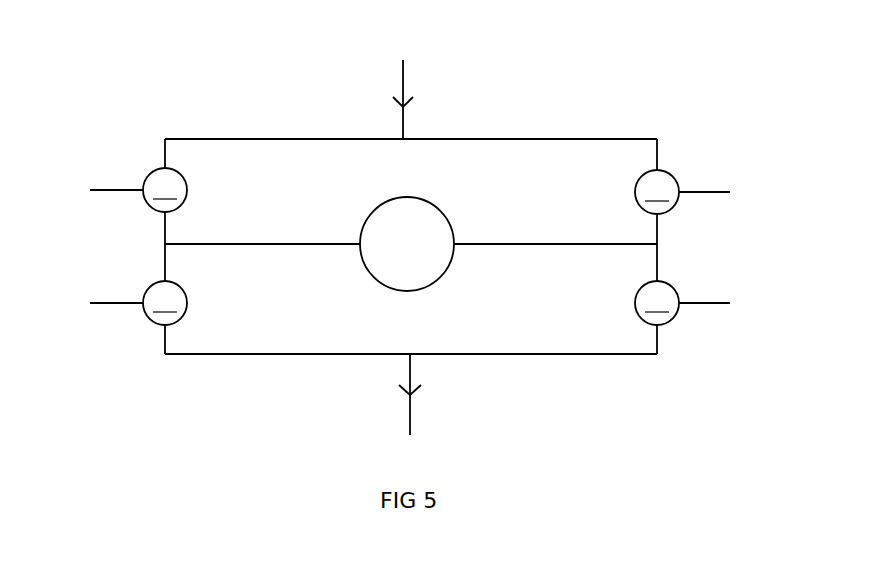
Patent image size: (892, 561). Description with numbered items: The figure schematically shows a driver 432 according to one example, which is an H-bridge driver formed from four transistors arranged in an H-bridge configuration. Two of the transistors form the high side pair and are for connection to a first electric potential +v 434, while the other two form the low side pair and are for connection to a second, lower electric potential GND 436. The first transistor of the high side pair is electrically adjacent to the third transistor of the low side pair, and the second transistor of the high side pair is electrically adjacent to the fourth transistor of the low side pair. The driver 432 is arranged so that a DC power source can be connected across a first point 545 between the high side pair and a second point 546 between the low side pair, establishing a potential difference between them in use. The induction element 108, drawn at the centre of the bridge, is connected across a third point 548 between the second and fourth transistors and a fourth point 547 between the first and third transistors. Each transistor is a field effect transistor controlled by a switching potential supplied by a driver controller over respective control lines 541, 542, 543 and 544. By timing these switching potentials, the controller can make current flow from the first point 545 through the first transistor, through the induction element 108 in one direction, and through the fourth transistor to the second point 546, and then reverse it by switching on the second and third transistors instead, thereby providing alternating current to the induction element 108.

The driver 432 is at (614, 94).
The induction element 108 is at (390, 254).
The first electric potential +v 434 is at (452, 99).
The second electric potential GND 436 is at (460, 394).
The control line 541 is at (120, 188).
The control line 542 is at (703, 195).
The control line 543 is at (120, 300).
The control line 544 is at (702, 301).
The first point 545 is at (414, 99).
The second point 546 is at (425, 364).
The fourth point 547 is at (163, 250).
The third point 548 is at (659, 256).